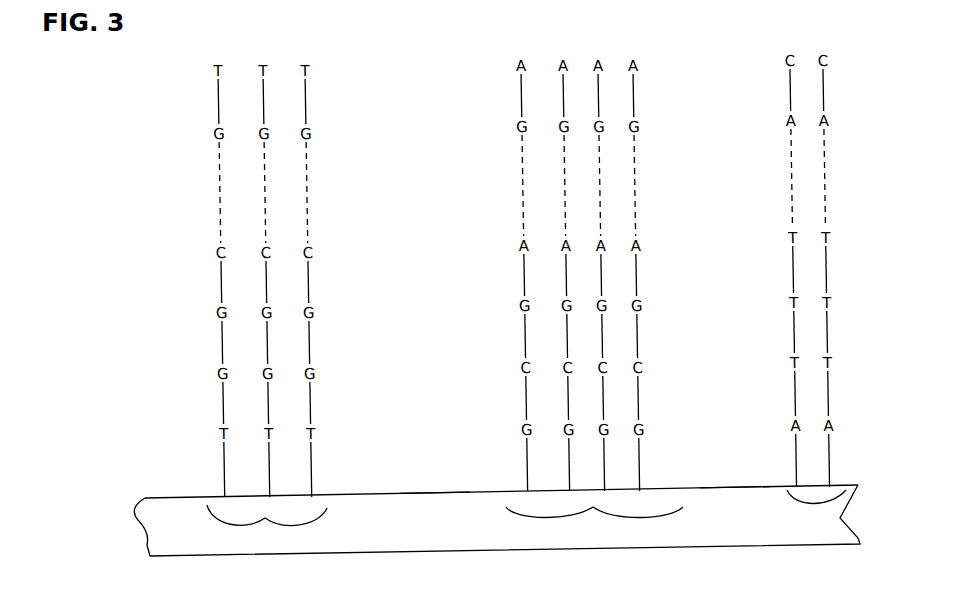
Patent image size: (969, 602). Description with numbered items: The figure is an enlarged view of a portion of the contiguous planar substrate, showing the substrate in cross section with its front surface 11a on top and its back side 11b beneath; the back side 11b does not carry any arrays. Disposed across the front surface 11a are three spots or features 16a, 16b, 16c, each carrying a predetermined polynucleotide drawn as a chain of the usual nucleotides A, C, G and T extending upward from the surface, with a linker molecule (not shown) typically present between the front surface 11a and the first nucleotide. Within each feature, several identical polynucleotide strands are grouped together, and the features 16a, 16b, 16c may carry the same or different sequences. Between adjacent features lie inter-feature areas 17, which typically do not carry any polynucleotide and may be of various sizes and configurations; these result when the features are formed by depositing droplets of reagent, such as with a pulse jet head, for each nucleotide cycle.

The front surface 11a is at (173, 497).
The back side 11b is at (170, 558).
The feature 16a is at (265, 518).
The feature 16b is at (594, 298).
The feature 16c is at (813, 288).
The inter-feature area 17 is at (448, 492).